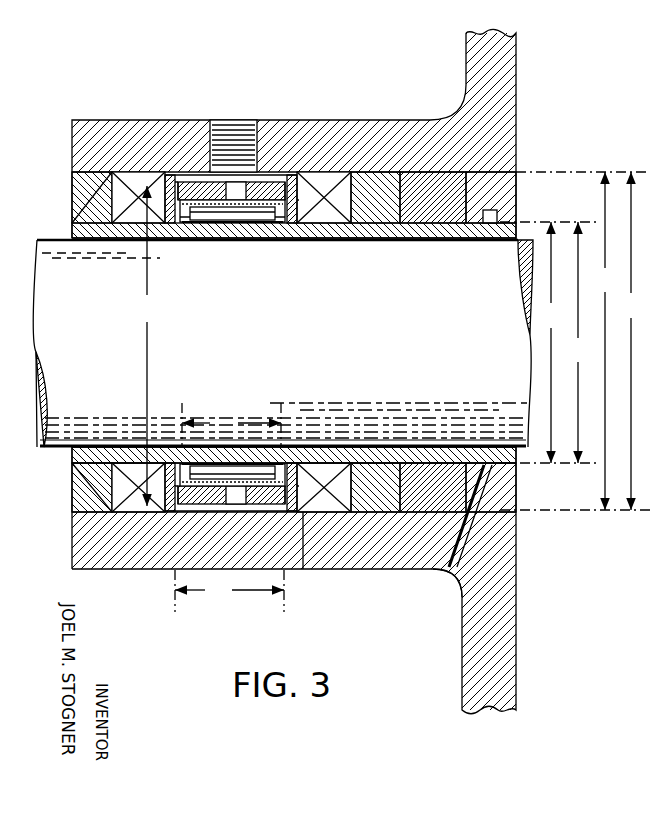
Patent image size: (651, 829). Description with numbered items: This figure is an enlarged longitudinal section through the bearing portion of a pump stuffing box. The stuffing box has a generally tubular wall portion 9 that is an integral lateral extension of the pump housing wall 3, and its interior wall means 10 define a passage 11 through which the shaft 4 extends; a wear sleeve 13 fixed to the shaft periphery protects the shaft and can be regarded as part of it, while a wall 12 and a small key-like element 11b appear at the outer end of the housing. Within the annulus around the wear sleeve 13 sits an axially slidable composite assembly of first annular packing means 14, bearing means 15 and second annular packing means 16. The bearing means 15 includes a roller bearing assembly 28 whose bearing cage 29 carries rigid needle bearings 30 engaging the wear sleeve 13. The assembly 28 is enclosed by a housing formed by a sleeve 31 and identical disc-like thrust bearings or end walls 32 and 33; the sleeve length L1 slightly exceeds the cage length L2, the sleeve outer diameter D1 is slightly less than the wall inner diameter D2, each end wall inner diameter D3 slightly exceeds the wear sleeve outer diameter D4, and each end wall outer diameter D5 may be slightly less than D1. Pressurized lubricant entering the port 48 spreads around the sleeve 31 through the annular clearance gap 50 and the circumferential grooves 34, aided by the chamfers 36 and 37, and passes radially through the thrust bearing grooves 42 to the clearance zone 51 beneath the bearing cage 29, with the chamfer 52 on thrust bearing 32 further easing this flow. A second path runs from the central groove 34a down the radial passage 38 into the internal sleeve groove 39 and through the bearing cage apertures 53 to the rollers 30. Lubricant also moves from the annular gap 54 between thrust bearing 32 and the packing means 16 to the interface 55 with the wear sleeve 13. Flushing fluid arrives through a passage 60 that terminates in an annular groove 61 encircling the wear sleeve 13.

The pump housing wall 3 is at (470, 79).
The shaft 4 is at (399, 336).
The tubular wall portion 9 is at (80, 141).
The interior wall means 10 is at (88, 188).
The passage 11 is at (72, 207).
The key 11b is at (498, 214).
The wall 12 is at (470, 190).
The wear sleeve 13 is at (436, 239).
The first annular packing means 14 is at (100, 240).
The bearing means 15 is at (290, 441).
The second annular packing means 16 is at (381, 226).
The bearing assembly 28 is at (172, 240).
The bearing cage 29 is at (200, 240).
The needle bearings 30 is at (265, 240).
The sleeve 31 is at (173, 569).
The thrust bearing 32 is at (256, 288).
The thrust bearing 33 is at (147, 180).
The circumferentially extending grooves 34 is at (273, 184).
The central external groove 34a is at (237, 185).
The chamfer 36 is at (170, 178).
The chamfer 37 is at (289, 178).
The radial passage 38 is at (187, 180).
The internal sleeve groove 39 is at (218, 240).
The radially extending grooves 42 is at (306, 196).
The port 48 is at (214, 120).
The annular clearance gap 50 is at (183, 182).
The annular clearance zone 51 is at (293, 240).
The chamfer 52 is at (303, 569).
The bearing cage apertures 53 is at (243, 240).
The annular gap 54 is at (294, 195).
The interface 55 is at (330, 239).
The passage 60 is at (437, 570).
The annular groove 61 is at (490, 462).
The outer diameter of the sleeve D1 is at (575, 341).
The inner diameter of the wall D2 is at (630, 341).
The inner diameter of the end wall D3 is at (578, 342).
The outer diameter of the wear sleeve D4 is at (550, 342).
The outer diameter of the end wall D5 is at (145, 346).
The axial length of the sleeve L1 is at (229, 591).
The axial length of the bearing cage L2 is at (231, 425).